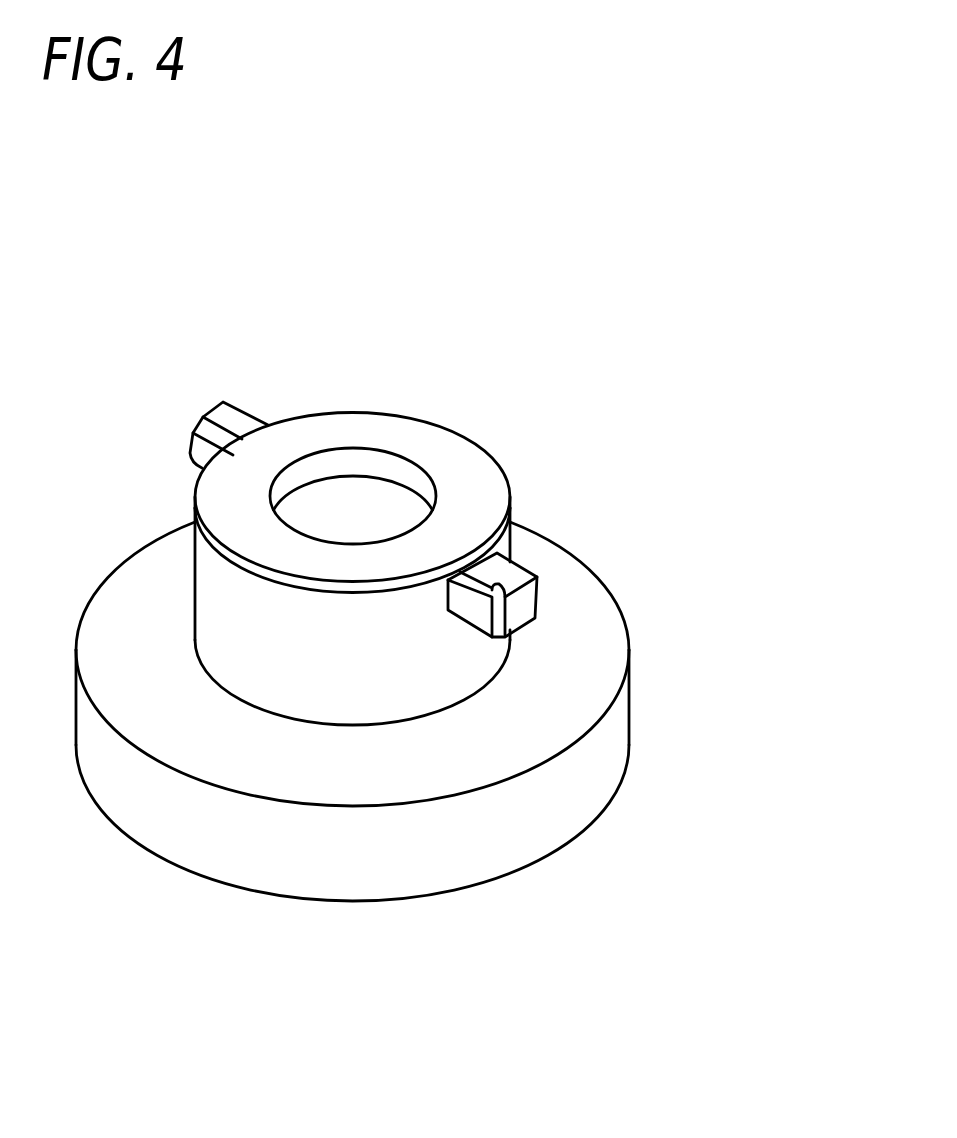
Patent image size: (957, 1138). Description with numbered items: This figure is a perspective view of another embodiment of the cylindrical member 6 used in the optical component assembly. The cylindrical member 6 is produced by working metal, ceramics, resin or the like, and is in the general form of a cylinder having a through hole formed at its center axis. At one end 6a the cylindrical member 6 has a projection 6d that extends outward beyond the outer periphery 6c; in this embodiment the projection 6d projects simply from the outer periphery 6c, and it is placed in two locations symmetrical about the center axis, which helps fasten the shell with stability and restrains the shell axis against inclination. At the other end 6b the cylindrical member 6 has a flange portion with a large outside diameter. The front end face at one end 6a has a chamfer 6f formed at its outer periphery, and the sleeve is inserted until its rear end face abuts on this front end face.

The cylindrical member 6 is at (579, 254).
The one end 6a is at (437, 450).
The other end 6b is at (410, 903).
The outer periphery 6c is at (422, 667).
The projection 6d is at (520, 603).
The chamfer 6f is at (507, 503).